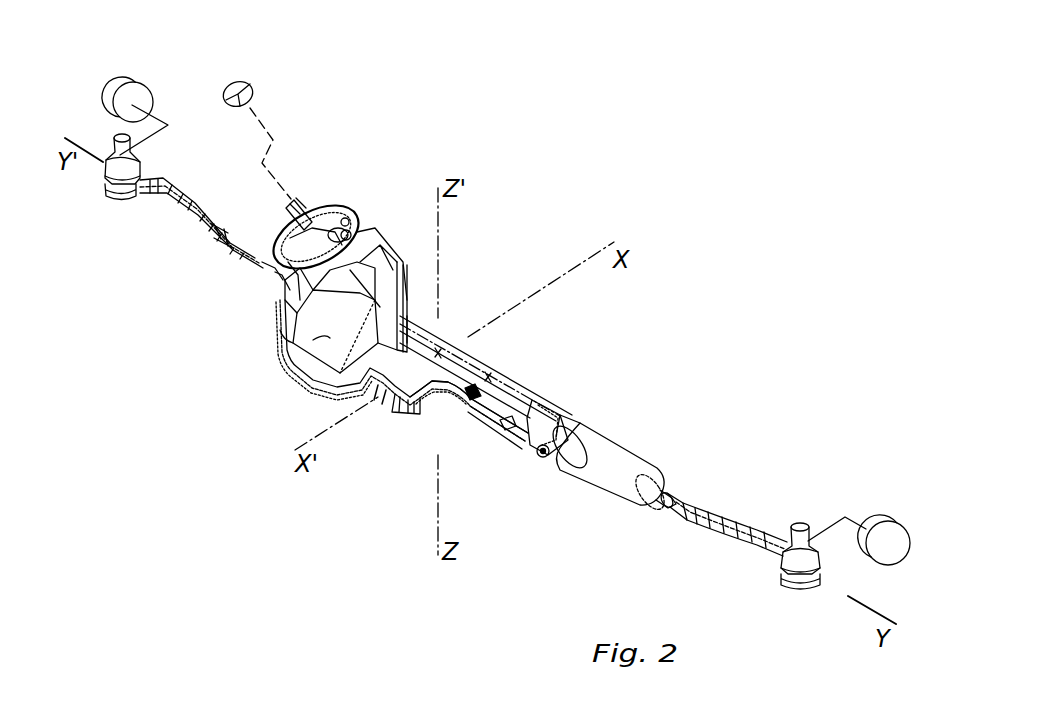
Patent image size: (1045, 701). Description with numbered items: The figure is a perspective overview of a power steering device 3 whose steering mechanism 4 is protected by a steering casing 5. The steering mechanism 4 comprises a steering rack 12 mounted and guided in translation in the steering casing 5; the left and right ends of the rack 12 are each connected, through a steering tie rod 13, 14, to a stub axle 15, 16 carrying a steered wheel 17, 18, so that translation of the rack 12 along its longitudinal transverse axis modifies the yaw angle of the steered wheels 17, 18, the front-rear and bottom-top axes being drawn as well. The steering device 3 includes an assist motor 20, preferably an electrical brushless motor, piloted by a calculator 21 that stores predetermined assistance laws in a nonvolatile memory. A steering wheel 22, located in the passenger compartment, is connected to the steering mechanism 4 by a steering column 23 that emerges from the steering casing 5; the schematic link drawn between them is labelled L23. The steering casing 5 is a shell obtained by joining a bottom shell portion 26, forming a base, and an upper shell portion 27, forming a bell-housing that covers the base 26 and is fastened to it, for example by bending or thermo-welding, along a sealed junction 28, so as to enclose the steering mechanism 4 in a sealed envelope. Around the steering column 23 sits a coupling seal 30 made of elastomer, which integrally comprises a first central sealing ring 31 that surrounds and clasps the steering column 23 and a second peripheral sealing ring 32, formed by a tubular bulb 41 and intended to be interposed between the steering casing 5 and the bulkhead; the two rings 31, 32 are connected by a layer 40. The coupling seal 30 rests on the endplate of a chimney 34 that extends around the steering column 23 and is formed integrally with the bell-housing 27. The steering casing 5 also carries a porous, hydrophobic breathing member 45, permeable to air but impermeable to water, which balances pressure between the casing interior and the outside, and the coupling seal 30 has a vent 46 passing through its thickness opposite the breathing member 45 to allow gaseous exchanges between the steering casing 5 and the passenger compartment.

The steering device 3 is at (466, 278).
The steering mechanism 4 is at (377, 238).
The steering casing 5 is at (539, 403).
The steering rack 12 is at (497, 372).
The steering tie rod 13 is at (227, 256).
The steering tie rod 14 is at (688, 503).
The stub axle 15 is at (168, 125).
The stub axle 16 is at (833, 520).
The steered wheel 17 is at (121, 86).
The steered wheel 18 is at (885, 557).
The assist motor 20 is at (281, 372).
The calculator 21 is at (418, 428).
The steering wheel 22 is at (250, 82).
The steering column 23 is at (307, 207).
The sensor connection L23 is at (293, 210).
The bottom shell portion 26 is at (480, 414).
The upper shell portion 27 is at (437, 404).
The sealed junction 28 is at (510, 430).
The coupling seal 30 is at (347, 206).
The first central sealing ring 31 is at (290, 270).
The second peripheral sealing ring 32 is at (270, 258).
The chimney 34 is at (362, 238).
The layer 40 is at (300, 235).
The tubular bulb 41 is at (278, 278).
The breathing member 45 is at (348, 232).
The vent 46 is at (348, 217).